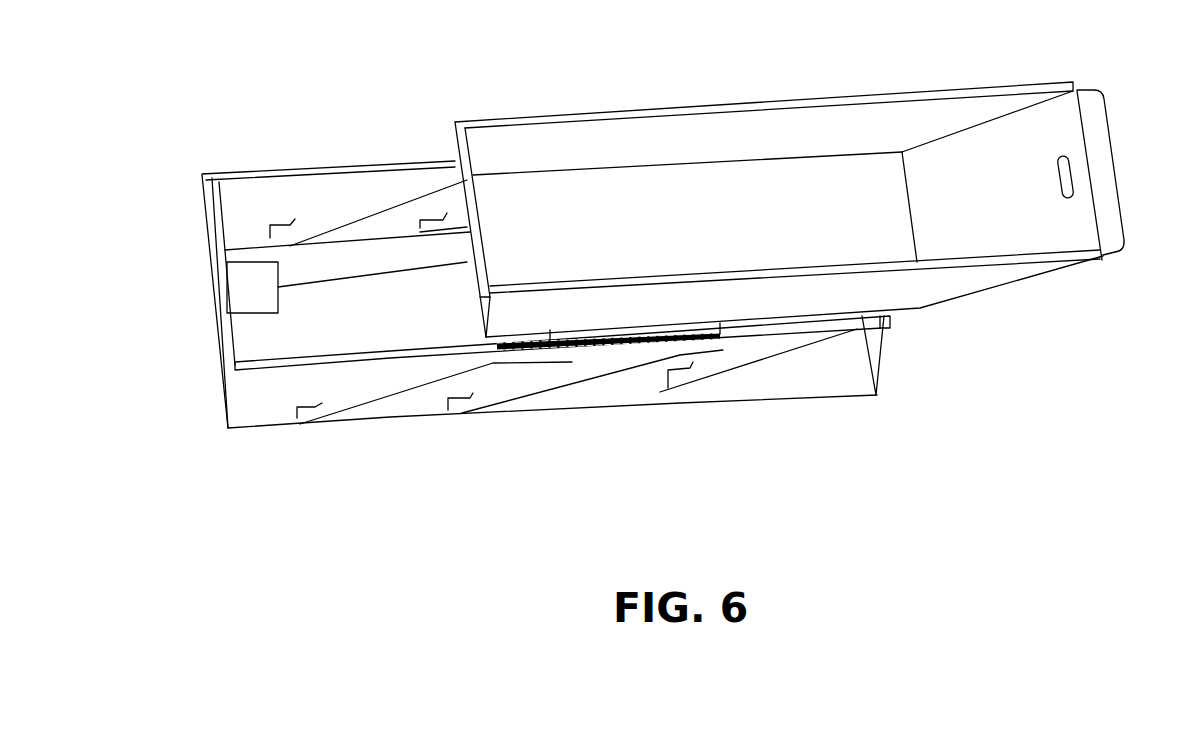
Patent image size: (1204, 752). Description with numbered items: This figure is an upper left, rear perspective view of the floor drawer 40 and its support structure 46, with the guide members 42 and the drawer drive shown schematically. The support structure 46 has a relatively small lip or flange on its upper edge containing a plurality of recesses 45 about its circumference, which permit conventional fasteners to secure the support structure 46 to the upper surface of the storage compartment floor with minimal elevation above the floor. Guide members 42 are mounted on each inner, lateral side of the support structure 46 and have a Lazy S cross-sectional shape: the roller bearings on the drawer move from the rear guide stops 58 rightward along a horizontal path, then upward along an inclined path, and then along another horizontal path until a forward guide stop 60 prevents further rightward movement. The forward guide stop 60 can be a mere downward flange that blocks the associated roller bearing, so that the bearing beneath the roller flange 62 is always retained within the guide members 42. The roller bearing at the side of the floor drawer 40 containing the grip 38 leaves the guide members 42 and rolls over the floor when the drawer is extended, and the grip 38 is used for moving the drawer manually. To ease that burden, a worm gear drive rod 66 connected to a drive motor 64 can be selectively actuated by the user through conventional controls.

The grip or handle 38 is at (1067, 175).
The floor drawer 40 is at (765, 195).
The guide members 42 is at (372, 210).
The recesses 45 is at (262, 173).
The support structure 46 is at (813, 383).
The rear guide stop 58 is at (277, 225).
The forward guide stop 60 is at (577, 347).
The roller flange 62 is at (613, 333).
The drive motor 64 is at (250, 289).
The worm gear drive rod 66 is at (350, 277).